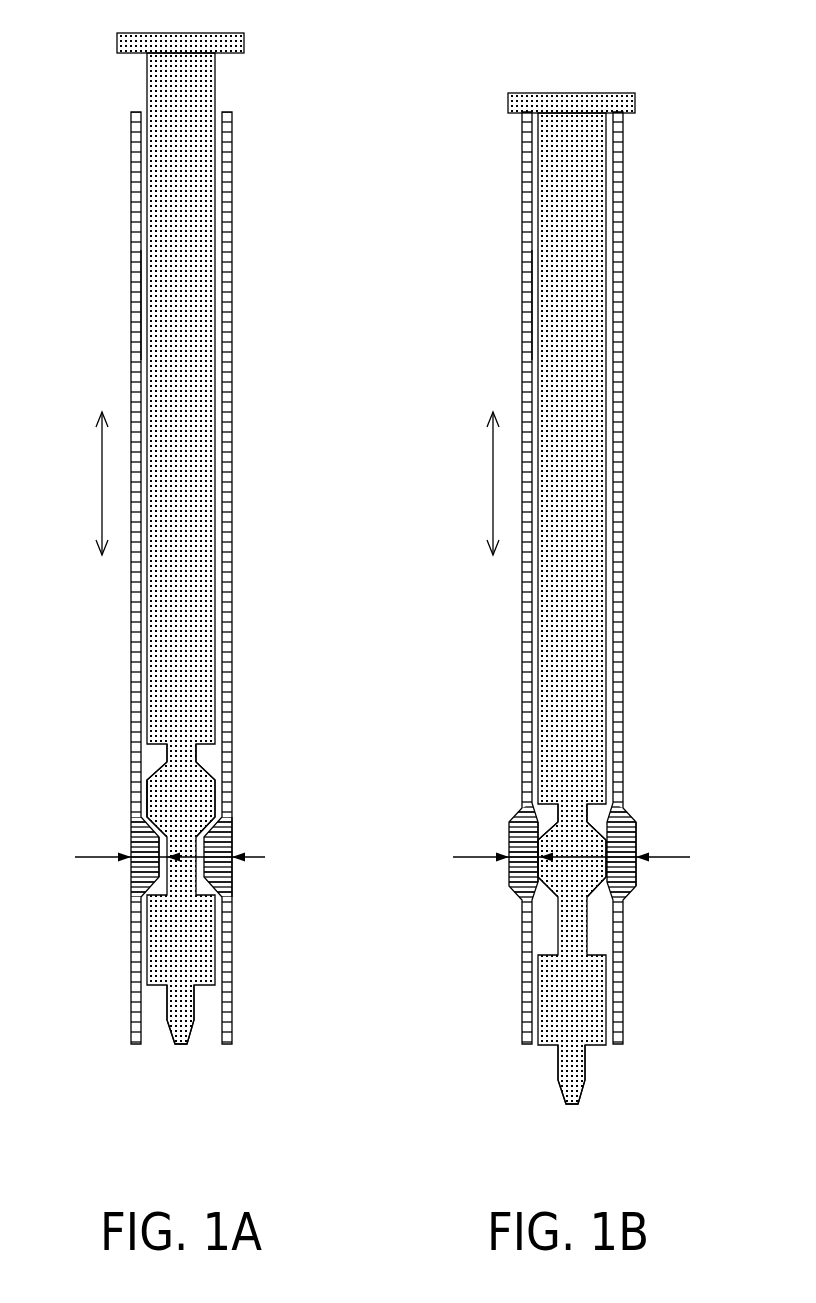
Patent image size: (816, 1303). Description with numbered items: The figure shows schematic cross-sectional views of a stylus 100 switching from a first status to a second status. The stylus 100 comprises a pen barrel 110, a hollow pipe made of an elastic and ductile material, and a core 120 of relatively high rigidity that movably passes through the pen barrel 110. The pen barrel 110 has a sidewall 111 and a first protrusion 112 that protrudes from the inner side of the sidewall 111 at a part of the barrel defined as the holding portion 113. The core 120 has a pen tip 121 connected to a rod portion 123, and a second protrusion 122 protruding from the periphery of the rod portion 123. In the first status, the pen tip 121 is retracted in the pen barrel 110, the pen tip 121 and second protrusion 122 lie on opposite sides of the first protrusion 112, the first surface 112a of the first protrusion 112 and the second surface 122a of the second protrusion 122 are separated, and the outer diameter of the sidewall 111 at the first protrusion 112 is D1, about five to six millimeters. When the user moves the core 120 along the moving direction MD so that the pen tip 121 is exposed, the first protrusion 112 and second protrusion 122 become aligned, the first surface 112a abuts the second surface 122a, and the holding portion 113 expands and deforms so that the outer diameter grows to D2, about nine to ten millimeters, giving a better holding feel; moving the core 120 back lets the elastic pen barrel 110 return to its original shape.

In FIG. 1A, the stylus 100 is at (201, 570).
In FIG. 1B, the stylus 100 is at (591, 600).
In FIG. 1A, the pen barrel 110 is at (189, 578).
In FIG. 1B, the pen barrel 110 is at (578, 578).
In FIG. 1A, the sidewall 111 is at (135, 305).
In FIG. 1B, the sidewall 111 is at (491, 305).
In FIG. 1A, the first protrusion 112 is at (145, 872).
In FIG. 1B, the first protrusion 112 is at (544, 853).
In FIG. 1A, the first surface 112a is at (172, 866).
In FIG. 1B, the first surface 112a is at (623, 870).
In FIG. 1A, the holding portion 113 is at (232, 845).
In FIG. 1B, the holding portion 113 is at (665, 845).
In FIG. 1A, the core 120 is at (176, 538).
In FIG. 1B, the core 120 is at (565, 598).
In FIG. 1A, the pen tip 121 is at (175, 1023).
In FIG. 1B, the pen tip 121 is at (517, 1074).
In FIG. 1A, the second protrusion 122 is at (160, 800).
In FIG. 1B, the second protrusion 122 is at (529, 816).
In FIG. 1A, the second surface 122a is at (138, 794).
In FIG. 1B, the second surface 122a is at (486, 828).
In FIG. 1A, the rod portion 123 is at (182, 753).
In FIG. 1B, the rod portion 123 is at (627, 793).
In FIG. 1A, the moving direction MD is at (83, 483).
In FIG. 1B, the moving direction MD is at (473, 483).
In FIG. 1A, the outer diameter in first status D1 is at (268, 857).
In FIG. 1B, the outer diameter in second status D2 is at (592, 843).